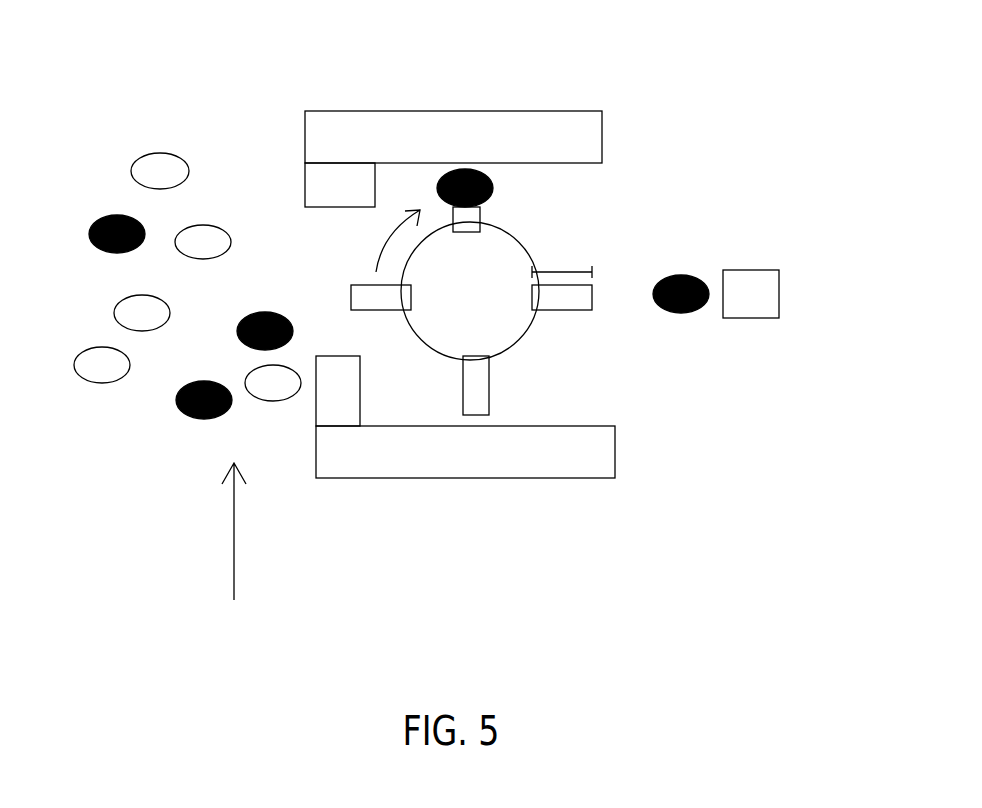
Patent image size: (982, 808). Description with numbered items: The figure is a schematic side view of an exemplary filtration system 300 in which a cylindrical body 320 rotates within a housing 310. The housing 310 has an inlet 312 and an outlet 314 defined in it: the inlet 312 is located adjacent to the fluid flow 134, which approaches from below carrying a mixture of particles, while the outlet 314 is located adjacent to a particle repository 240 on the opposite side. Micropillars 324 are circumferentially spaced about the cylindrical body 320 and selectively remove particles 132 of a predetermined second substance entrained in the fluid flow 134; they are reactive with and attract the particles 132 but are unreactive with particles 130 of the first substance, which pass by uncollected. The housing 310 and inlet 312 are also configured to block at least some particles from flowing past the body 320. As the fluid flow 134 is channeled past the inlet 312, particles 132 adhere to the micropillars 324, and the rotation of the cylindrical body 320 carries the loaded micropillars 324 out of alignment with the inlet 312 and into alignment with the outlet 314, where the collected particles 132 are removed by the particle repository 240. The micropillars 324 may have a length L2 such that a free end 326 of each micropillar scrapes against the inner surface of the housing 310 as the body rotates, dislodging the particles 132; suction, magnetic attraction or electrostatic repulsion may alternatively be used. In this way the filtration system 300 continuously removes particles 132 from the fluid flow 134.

The filtration system 300 is at (325, 47).
The housing 310 is at (553, 111).
The inlet 312 is at (302, 232).
The outlet 314 is at (610, 238).
The cylindrical body 320 is at (492, 260).
The micropillars 324 is at (585, 310).
The free end 326 is at (487, 168).
The length L2 is at (592, 272).
The particle repository 240 is at (779, 294).
The particles of the first substance 130 is at (155, 153).
The particles of the second substance 132 is at (265, 312).
The fluid flow 134 is at (234, 530).